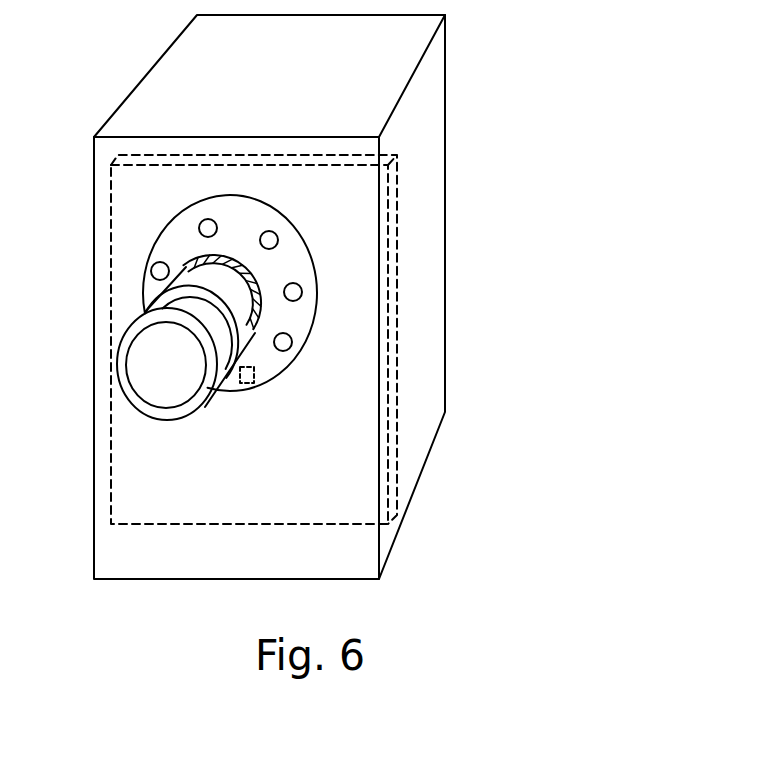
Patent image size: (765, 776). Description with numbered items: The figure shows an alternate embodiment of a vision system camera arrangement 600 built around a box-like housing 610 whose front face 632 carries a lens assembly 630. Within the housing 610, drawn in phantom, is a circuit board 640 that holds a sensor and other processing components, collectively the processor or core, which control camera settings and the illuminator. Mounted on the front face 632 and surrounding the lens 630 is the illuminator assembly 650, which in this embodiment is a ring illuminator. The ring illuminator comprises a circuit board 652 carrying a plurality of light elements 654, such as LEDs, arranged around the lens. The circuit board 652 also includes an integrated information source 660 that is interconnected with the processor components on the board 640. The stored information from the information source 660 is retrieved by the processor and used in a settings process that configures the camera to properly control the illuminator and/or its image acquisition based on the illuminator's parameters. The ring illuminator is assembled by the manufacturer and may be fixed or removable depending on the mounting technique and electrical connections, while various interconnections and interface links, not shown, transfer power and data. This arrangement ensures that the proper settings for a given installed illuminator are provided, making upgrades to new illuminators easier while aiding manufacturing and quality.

The vision system camera arrangement 600 is at (284, 320).
The housing 610 is at (435, 343).
The lens assembly 630 is at (163, 305).
The front face 632 is at (145, 546).
The circuit board 640 is at (395, 433).
The illuminator assembly 650 is at (258, 184).
The circuit board 652 is at (270, 213).
The light elements 654 is at (203, 222).
The integrated information source 660 is at (252, 386).